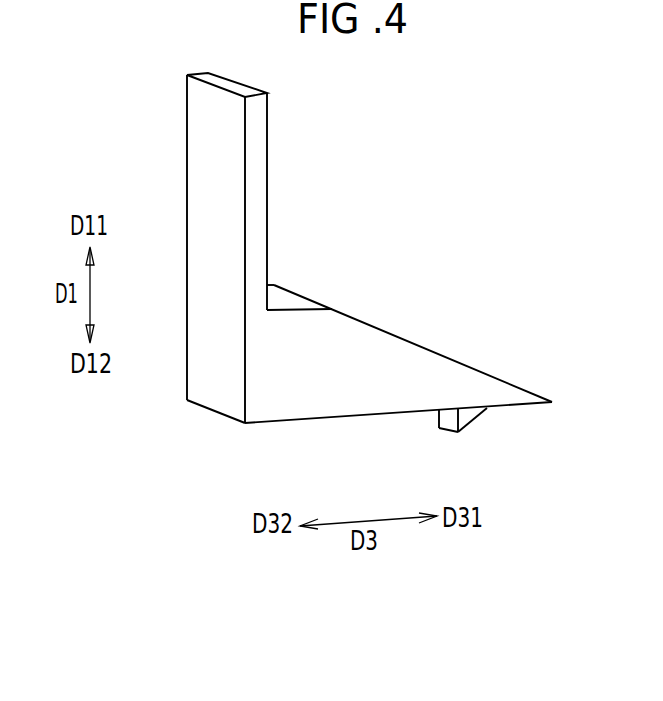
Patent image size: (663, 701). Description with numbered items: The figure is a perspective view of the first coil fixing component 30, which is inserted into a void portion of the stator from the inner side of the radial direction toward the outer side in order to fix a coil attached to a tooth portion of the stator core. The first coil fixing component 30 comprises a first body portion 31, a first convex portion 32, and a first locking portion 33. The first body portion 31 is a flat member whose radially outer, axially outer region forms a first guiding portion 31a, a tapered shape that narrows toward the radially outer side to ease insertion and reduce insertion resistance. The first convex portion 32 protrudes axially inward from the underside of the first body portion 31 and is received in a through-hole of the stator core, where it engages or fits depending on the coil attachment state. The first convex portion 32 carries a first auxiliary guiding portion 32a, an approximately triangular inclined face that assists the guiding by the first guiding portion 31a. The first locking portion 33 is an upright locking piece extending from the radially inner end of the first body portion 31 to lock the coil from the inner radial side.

The first coil fixing component 30 is at (474, 136).
The first locking portion 33 is at (200, 130).
The first body portion 31 is at (280, 422).
The first guiding portion 31a is at (413, 343).
The first convex portion 32 is at (448, 426).
The first auxiliary guiding portion 32a is at (478, 414).